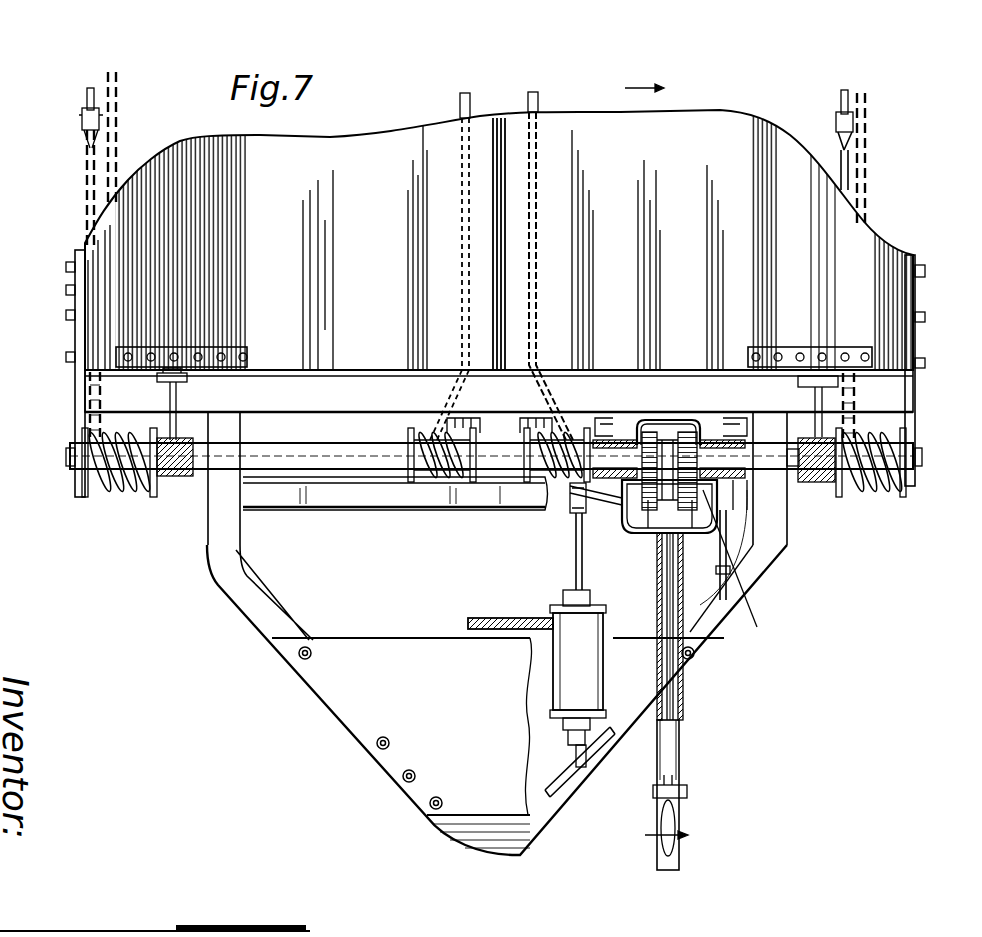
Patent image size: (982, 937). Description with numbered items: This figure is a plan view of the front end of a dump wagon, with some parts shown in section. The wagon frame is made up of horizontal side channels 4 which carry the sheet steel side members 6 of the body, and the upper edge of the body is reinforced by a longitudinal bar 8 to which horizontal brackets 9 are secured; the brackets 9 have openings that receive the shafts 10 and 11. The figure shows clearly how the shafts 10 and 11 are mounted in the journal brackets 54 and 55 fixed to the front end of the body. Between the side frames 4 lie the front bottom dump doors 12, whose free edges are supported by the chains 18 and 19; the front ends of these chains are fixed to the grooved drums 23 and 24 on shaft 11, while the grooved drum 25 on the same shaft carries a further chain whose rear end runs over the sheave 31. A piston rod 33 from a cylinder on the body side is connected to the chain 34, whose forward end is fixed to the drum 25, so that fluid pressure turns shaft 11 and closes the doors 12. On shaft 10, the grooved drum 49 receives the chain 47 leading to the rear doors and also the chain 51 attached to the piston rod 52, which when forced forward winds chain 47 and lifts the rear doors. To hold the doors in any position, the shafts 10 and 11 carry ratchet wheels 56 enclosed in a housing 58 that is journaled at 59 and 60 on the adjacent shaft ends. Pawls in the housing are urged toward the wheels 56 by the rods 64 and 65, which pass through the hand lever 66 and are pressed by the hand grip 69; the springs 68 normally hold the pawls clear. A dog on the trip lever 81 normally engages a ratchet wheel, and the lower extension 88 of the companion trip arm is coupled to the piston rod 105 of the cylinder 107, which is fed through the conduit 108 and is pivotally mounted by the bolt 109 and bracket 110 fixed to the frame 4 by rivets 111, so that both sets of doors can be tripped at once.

The side channel 4 is at (210, 512).
The side member 6 is at (232, 280).
The reinforcing bar 8 is at (670, 463).
The bracket 9 is at (78, 400).
The shaft 10 is at (918, 466).
The shaft 11 is at (72, 466).
The bottom dump door 12 is at (513, 244).
The chain 18 is at (537, 104).
The chain 19 is at (458, 102).
The grooved drum 23 is at (530, 445).
The grooved drum 24 is at (408, 440).
The grooved drum 25 is at (134, 414).
The sheave 31 is at (116, 126).
The piston rod 33 is at (84, 102).
The chain 34 is at (86, 170).
The chain 47 is at (869, 108).
The grooved drum 49 is at (873, 438).
The chain 51 is at (846, 138).
The piston rod 52 is at (838, 98).
The journal bracket 54 is at (176, 480).
The journal bracket 55 is at (702, 442).
The ratchet wheel 56 is at (602, 425).
The housing 58 is at (722, 545).
The journal 59 is at (756, 560).
The journal 60 is at (620, 506).
The rod 64 is at (660, 608).
The rod 65 is at (682, 680).
The hand lever 66 is at (680, 728).
The spring 68 is at (662, 536).
The hand grip 69 is at (672, 824).
The trip lever 81 is at (743, 570).
The lower extension 88 is at (576, 512).
The piston rod 105 is at (576, 557).
The cylinder 107 is at (563, 668).
The conduit 108 is at (482, 618).
The bolt 109 is at (562, 720).
The bracket 110 is at (570, 746).
The rivet 111 is at (562, 765).